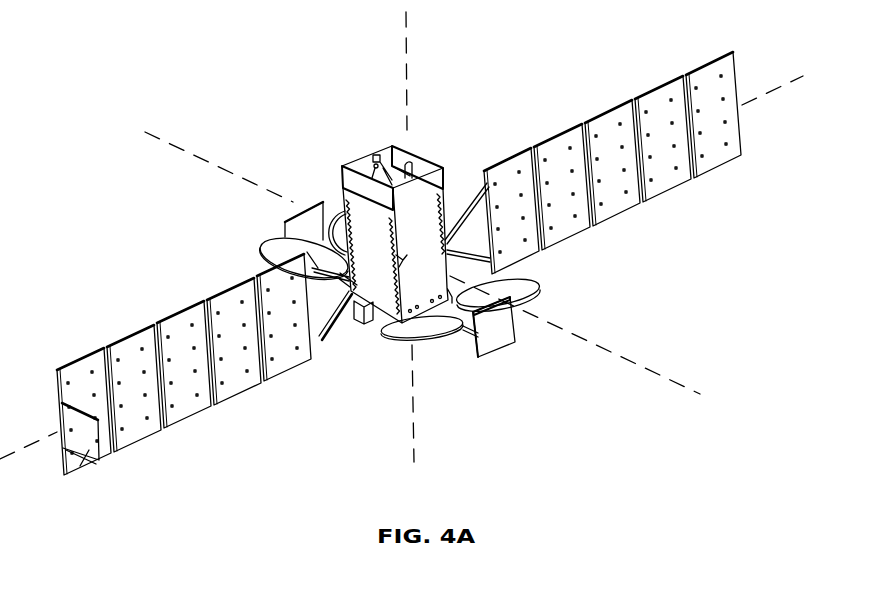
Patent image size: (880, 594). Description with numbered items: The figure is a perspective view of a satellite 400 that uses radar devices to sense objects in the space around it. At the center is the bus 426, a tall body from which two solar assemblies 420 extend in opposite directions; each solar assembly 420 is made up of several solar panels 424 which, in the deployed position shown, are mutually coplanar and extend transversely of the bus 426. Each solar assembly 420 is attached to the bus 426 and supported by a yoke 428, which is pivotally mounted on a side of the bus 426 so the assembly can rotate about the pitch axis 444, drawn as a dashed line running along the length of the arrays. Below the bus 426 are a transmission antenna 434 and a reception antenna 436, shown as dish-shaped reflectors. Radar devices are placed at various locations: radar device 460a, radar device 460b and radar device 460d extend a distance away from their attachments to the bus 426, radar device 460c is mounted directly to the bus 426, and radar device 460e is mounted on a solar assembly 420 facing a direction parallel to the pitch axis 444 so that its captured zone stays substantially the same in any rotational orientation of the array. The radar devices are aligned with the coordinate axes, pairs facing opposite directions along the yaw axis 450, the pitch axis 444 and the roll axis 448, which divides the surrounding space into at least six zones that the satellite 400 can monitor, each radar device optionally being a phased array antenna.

The satellite 400 is at (130, 182).
The solar assembly 420 is at (399, 262).
The solar panel 424 is at (193, 407).
The bus 426 is at (466, 200).
The yoke 428 is at (332, 337).
The transmission antenna 434 is at (398, 340).
The reception antenna 436 is at (540, 288).
The pitch axis 444 is at (758, 97).
The roll axis 448 is at (655, 367).
The yaw axis 450 is at (408, 33).
The radar device 460a is at (505, 343).
The radar device 460b is at (314, 202).
The radar device 460c is at (433, 140).
The radar device 460d is at (338, 226).
The radar device 460e is at (88, 448).